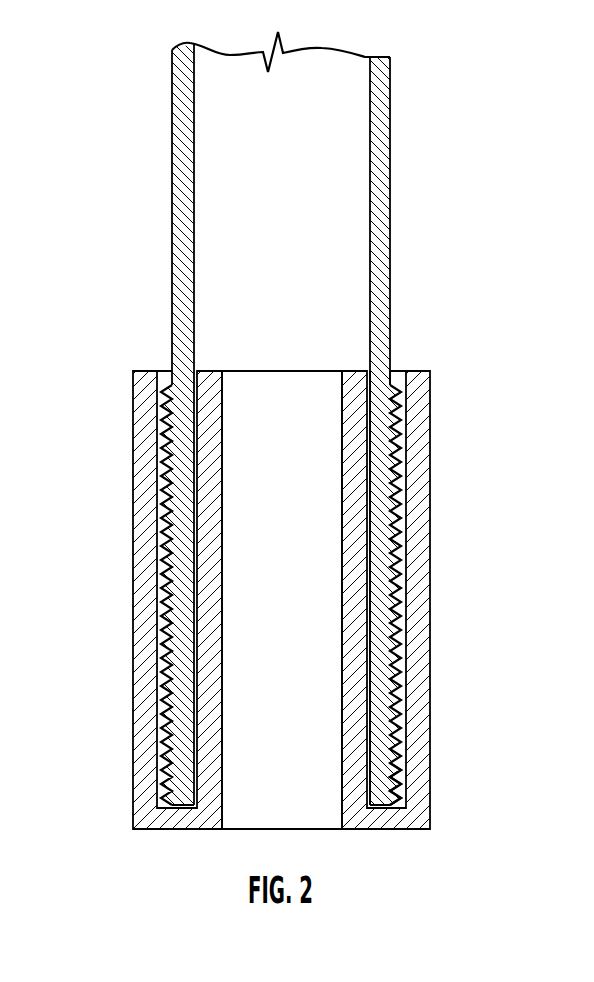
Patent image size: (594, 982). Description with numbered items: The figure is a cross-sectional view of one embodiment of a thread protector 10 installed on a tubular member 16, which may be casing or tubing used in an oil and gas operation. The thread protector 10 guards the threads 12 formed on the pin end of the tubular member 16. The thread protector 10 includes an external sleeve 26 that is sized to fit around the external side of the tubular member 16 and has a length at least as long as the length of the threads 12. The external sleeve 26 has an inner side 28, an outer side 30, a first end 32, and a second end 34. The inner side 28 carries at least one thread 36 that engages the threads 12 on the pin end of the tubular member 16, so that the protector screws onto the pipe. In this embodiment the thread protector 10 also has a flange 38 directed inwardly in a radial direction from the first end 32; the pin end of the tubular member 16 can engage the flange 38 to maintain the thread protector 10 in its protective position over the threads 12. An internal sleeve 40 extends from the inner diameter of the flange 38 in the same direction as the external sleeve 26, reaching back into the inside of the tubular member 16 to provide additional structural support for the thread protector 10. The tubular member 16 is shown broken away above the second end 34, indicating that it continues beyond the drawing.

The thread protector 10 is at (516, 610).
The threads 12 is at (164, 458).
The tubular member 16 is at (172, 230).
The external sleeve 26 is at (430, 477).
The inner side 28 is at (391, 371).
The outer side 30 is at (430, 597).
The first end 32 is at (430, 773).
The second end 34 is at (422, 371).
The thread 36 is at (398, 762).
The flange 38 is at (184, 820).
The internal sleeve 40 is at (222, 690).